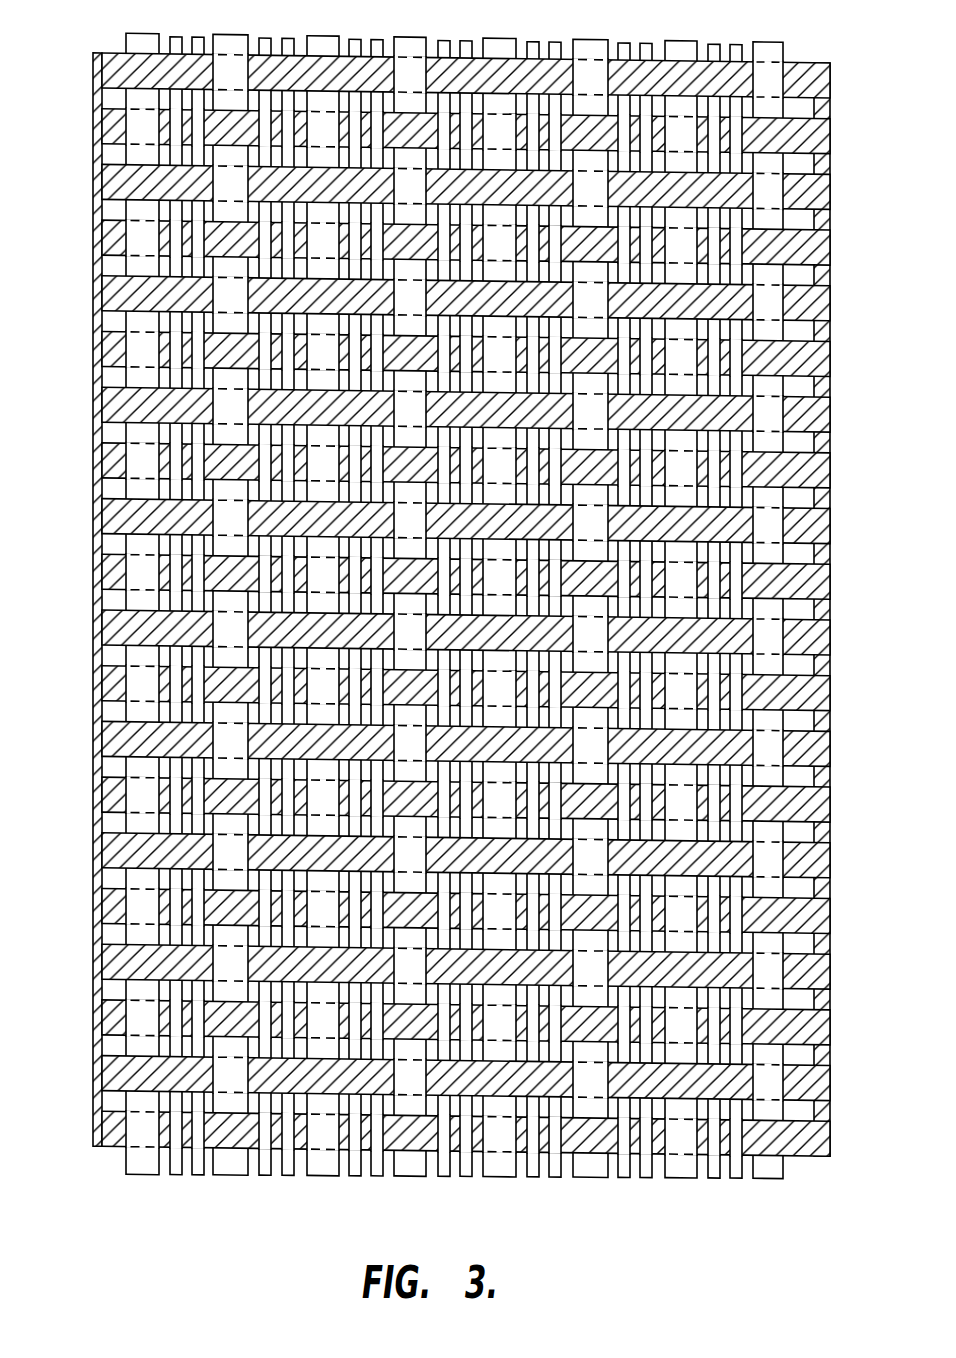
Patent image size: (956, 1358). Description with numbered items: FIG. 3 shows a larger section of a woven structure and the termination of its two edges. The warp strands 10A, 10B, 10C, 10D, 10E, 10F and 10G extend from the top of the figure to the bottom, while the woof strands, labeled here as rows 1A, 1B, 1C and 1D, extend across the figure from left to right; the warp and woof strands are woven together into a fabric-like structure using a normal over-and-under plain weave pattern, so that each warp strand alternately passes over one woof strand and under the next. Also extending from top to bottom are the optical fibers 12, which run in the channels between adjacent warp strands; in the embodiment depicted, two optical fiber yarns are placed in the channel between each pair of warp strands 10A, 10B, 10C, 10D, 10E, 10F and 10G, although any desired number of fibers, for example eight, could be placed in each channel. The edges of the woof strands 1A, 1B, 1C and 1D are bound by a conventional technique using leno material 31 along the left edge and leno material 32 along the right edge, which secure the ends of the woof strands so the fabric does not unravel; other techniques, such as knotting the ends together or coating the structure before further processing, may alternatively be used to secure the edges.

The first weft band 1A is at (92, 79).
The second weft band 1B is at (92, 132).
The third weft band 1C is at (92, 185).
The fourth weft band 1D is at (92, 246).
The warp strand 10A is at (147, 34).
The warp strand 10B is at (234, 35).
The warp strand 10C is at (330, 36).
The warp strand 10D is at (414, 37).
The warp strand 10E is at (506, 38).
The warp strand 10F is at (684, 40).
The warp strand 10G is at (779, 41).
The optical fibers 12 is at (263, 1177).
The leno material 31 is at (94, 1095).
The leno material 32 is at (823, 1108).